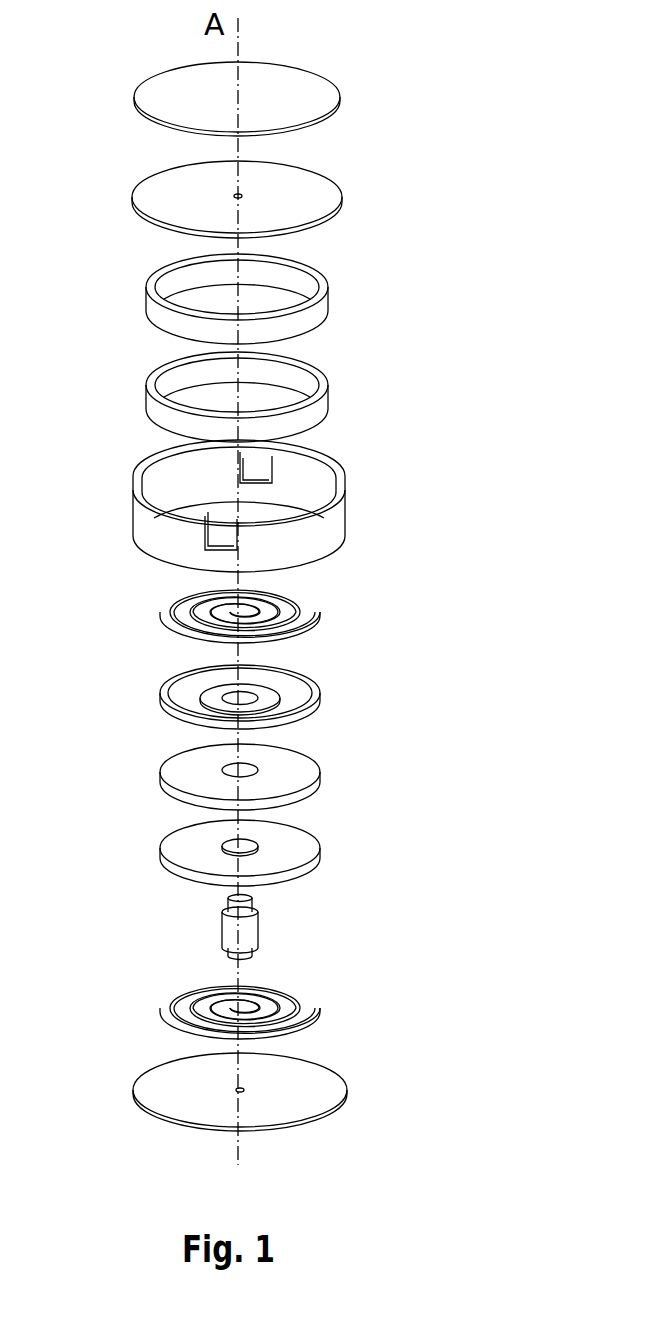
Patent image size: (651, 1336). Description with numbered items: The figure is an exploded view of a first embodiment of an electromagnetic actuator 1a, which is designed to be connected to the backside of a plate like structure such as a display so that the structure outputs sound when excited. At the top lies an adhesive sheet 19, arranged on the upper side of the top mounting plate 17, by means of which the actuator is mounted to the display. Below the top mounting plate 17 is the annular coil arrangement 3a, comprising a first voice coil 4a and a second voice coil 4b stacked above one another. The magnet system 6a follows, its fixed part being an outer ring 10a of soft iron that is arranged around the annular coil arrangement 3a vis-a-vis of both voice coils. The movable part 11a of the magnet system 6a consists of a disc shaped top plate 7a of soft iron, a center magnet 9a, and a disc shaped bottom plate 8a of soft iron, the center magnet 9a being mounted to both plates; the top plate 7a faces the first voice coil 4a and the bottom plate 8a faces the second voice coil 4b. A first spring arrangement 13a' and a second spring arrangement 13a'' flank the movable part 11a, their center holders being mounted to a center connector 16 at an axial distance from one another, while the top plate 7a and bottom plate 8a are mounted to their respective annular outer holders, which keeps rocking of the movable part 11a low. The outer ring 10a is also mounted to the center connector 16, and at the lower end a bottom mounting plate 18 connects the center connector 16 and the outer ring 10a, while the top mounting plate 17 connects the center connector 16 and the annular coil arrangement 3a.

The electromagnetic actuator 1a is at (470, 42).
The adhesive sheet 19 is at (325, 98).
The top mounting plate 17 is at (325, 193).
The annular coil arrangement 3a is at (317, 348).
The first voice coil 4a is at (320, 308).
The second voice coil 4b is at (320, 405).
The magnet system 6a is at (309, 663).
The outer ring 10a is at (332, 538).
The first spring arrangement 13a' is at (192, 613).
The movable part of the magnet system 11a is at (328, 775).
The top plate 7a is at (315, 710).
The center magnet 9a is at (310, 787).
The bottom plate 8a is at (284, 851).
The center connector 16 is at (252, 928).
The second spring arrangement 13a'' is at (192, 1012).
The bottom mounting plate 18 is at (315, 1105).